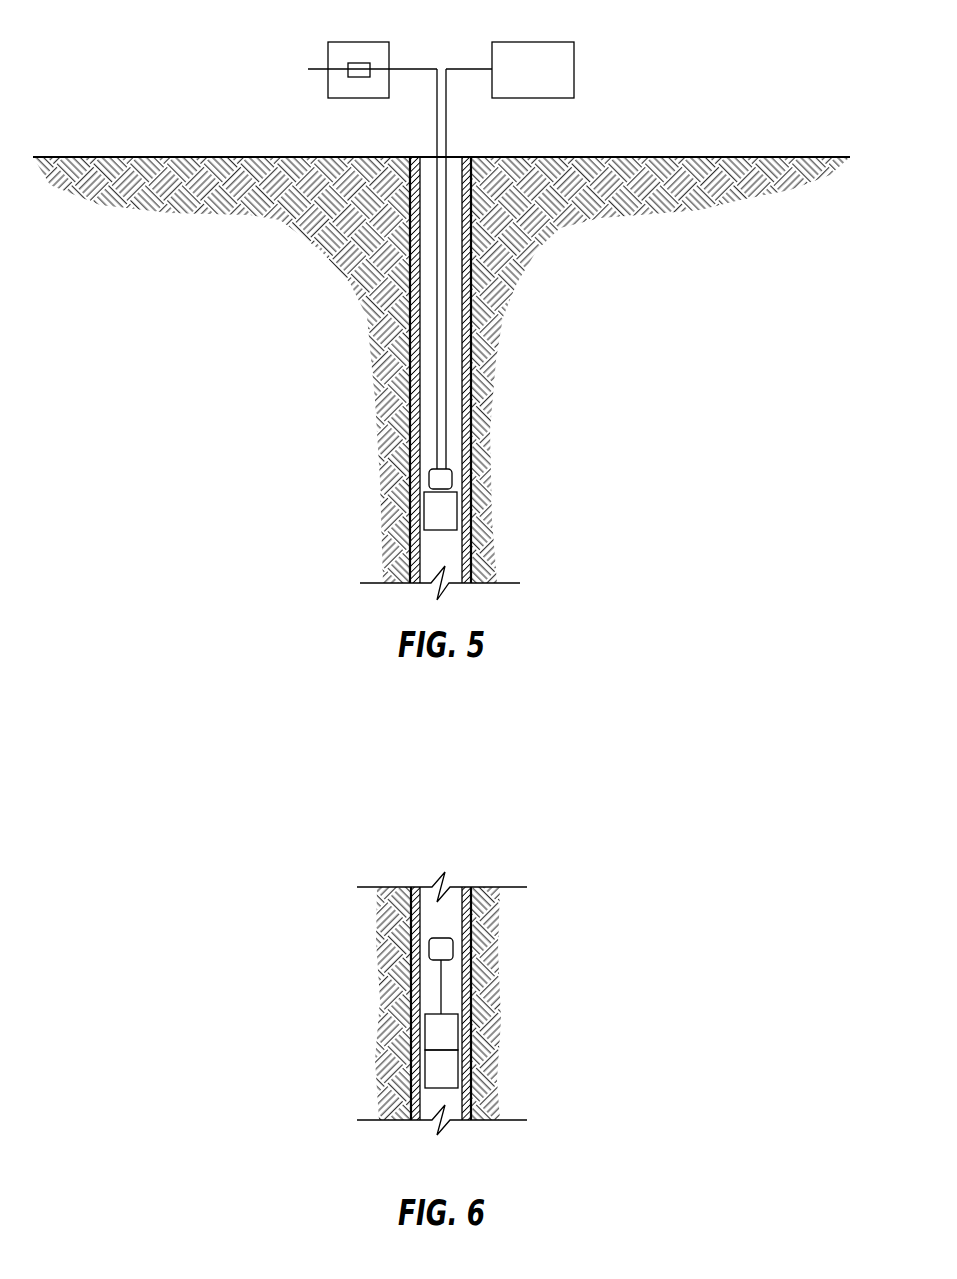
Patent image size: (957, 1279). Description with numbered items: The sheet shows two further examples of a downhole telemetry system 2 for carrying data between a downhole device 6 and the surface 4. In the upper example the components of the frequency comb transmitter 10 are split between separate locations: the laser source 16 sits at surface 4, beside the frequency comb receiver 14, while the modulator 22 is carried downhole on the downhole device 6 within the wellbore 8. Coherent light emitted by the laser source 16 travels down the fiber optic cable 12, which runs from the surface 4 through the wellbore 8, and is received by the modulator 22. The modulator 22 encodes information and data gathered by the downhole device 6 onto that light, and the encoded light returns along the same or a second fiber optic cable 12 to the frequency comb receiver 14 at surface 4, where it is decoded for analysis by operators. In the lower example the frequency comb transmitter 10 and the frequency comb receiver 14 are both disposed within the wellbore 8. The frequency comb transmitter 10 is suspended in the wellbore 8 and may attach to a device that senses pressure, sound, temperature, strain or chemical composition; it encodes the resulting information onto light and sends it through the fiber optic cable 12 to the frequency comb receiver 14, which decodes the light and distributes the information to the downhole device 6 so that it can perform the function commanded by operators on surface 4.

In FIG. 5, the downhole telemetry system 2 is at (373, 391).
In FIG. 6, the downhole telemetry system 2 is at (361, 984).
In FIG. 5, the surface 4 is at (308, 155).
In FIG. 5, the downhole device 6 is at (440, 511).
In FIG. 6, the downhole device 6 is at (441, 1069).
In FIG. 5, the wellbore 8 is at (472, 403).
In FIG. 6, the wellbore 8 is at (472, 942).
In FIG. 6, the frequency comb transmitter 10 is at (428, 948).
In FIG. 5, the fiber optic cable 12 is at (435, 382).
In FIG. 6, the fiber optic cable 12 is at (443, 985).
In FIG. 5, the frequency comb receiver 14 is at (510, 70).
In FIG. 6, the frequency comb receiver 14 is at (441, 1032).
In FIG. 5, the laser source 16 is at (377, 50).
In FIG. 5, the optical modulator 22 is at (453, 482).